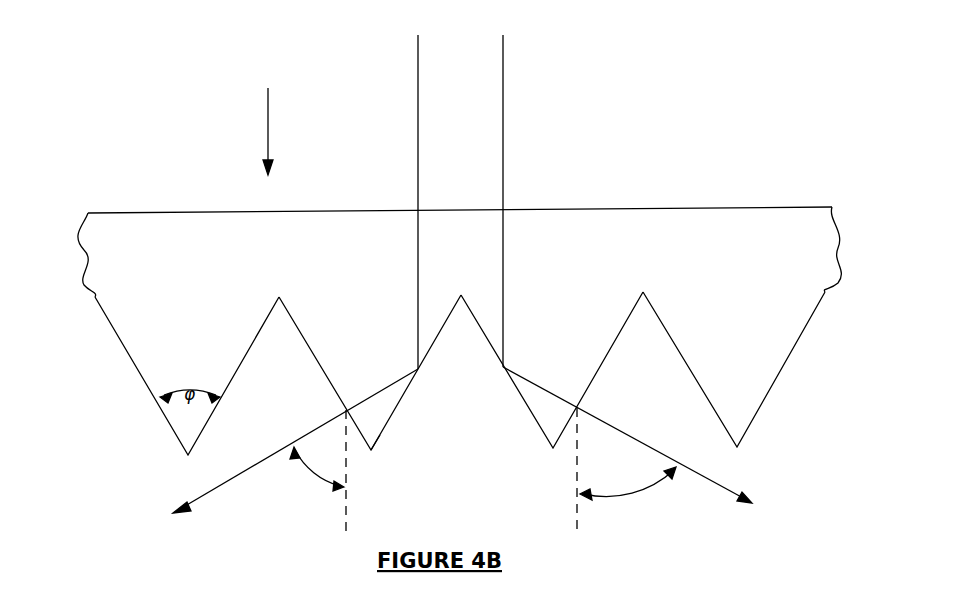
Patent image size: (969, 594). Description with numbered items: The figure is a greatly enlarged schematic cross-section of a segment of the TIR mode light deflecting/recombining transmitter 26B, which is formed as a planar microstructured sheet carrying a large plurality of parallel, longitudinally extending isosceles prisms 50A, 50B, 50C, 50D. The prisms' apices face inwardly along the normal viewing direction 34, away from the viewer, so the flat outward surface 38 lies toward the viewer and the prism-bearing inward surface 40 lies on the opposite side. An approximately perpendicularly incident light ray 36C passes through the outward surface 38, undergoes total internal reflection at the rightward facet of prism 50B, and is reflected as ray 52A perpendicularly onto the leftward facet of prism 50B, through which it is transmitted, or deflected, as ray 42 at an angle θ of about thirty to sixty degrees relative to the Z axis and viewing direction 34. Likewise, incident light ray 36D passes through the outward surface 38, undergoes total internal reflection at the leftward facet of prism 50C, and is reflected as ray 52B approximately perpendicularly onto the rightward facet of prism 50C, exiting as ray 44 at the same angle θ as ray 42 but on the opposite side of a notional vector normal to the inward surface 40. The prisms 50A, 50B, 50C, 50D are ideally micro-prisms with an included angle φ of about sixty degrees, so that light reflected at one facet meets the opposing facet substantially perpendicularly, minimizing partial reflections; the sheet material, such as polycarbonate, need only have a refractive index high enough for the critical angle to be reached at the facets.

The TIR mode light deflecting/recombining transmitter 26B is at (708, 180).
The normal viewing direction 34 is at (268, 133).
The incident light ray 36C is at (418, 96).
The incident light ray 36D is at (503, 99).
The outward surface 38 is at (356, 212).
The inward surface 40 is at (393, 413).
The deflected ray 42 is at (220, 485).
The deflected ray 44 is at (722, 487).
The isosceles prism 50A is at (187, 376).
The isosceles prism 50B is at (370, 372).
The isosceles prism 50C is at (552, 370).
The isosceles prism 50D is at (734, 369).
The reflected ray 52A is at (355, 406).
The reflected ray 52B is at (504, 366).